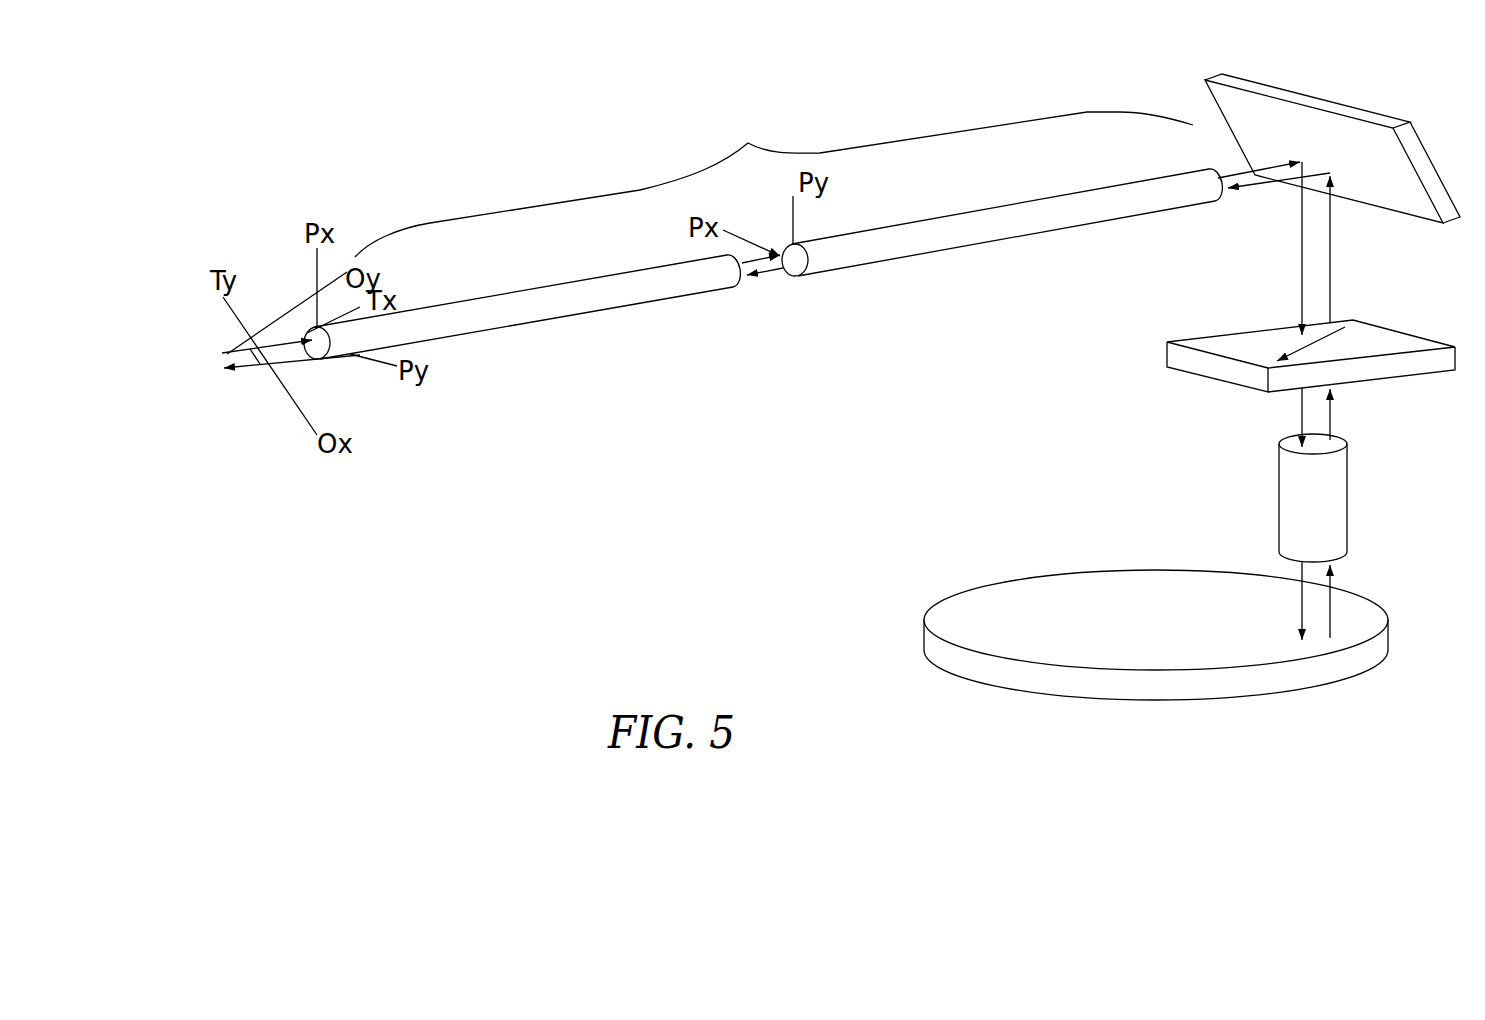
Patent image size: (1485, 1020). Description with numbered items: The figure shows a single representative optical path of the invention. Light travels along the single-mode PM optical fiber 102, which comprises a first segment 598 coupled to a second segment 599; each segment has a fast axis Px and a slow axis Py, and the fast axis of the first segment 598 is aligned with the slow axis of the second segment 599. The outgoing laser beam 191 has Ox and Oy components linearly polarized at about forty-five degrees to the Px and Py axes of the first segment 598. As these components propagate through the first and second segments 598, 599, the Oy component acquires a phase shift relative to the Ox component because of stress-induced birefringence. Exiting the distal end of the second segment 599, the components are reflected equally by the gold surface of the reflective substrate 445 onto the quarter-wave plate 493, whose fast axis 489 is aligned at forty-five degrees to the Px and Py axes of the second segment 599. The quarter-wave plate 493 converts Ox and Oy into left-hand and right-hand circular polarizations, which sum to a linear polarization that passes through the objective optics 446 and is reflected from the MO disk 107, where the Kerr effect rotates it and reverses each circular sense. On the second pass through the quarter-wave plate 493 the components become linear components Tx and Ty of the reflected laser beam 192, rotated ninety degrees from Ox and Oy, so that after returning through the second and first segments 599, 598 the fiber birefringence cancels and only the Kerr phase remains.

The single-mode PM optical fiber 102 is at (774, 184).
The first segment 598 is at (522, 319).
The second segment 599 is at (1002, 251).
The outgoing laser beam 191 is at (1300, 596).
The reflected laser beam 192 is at (1392, 575).
The reflective substrate 445 is at (1332, 138).
The quarter-wave plate 493 is at (1258, 337).
The fast axis 489 is at (1330, 350).
The objective optics 446 is at (1287, 511).
The MO disk 107 is at (963, 628).